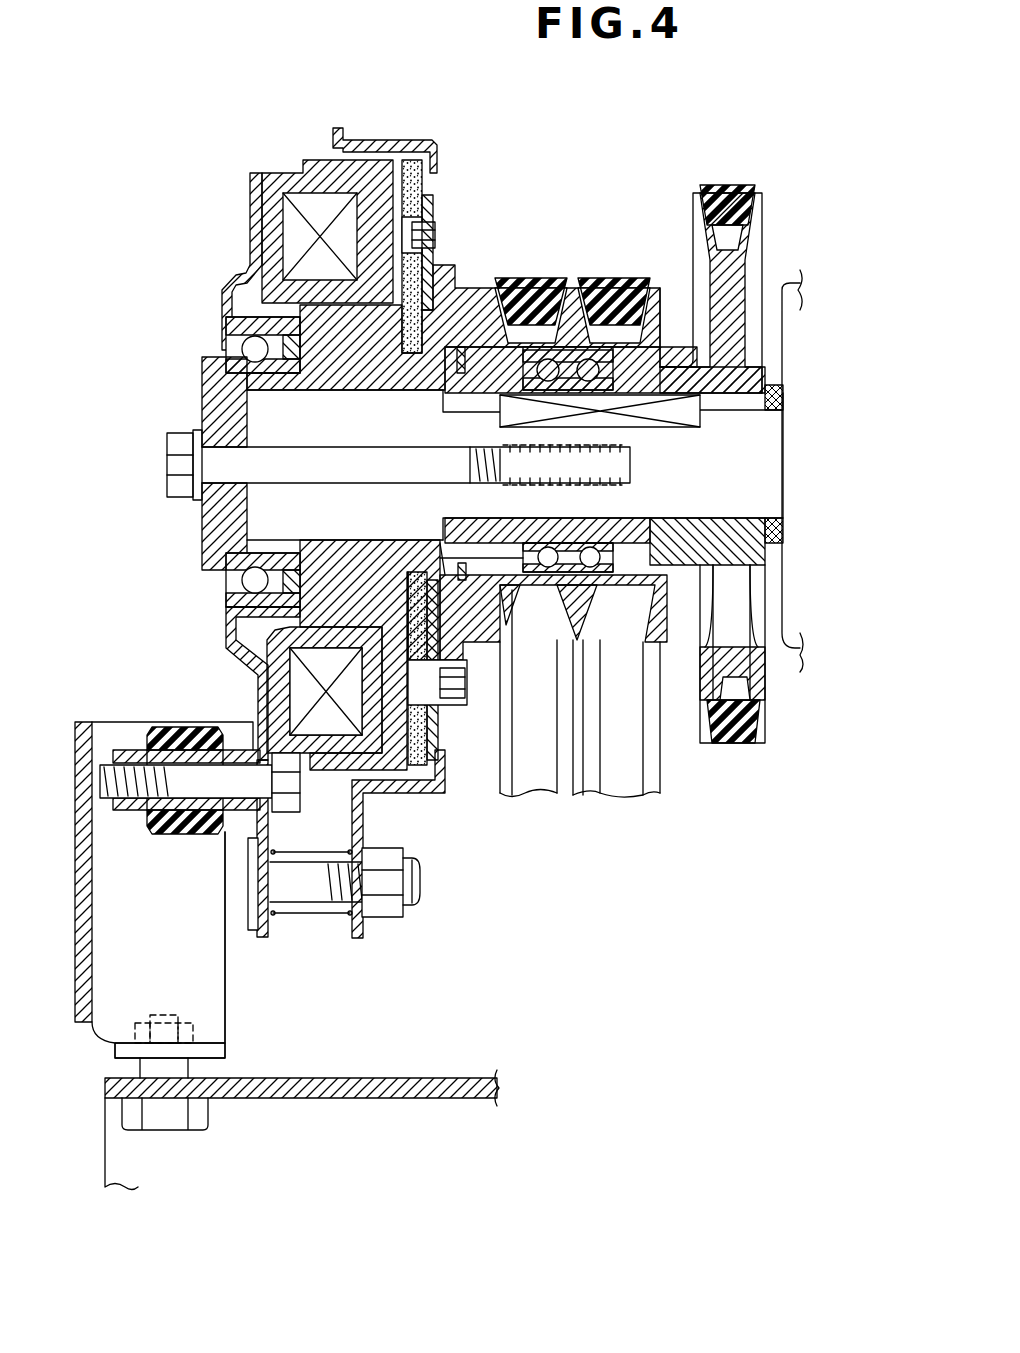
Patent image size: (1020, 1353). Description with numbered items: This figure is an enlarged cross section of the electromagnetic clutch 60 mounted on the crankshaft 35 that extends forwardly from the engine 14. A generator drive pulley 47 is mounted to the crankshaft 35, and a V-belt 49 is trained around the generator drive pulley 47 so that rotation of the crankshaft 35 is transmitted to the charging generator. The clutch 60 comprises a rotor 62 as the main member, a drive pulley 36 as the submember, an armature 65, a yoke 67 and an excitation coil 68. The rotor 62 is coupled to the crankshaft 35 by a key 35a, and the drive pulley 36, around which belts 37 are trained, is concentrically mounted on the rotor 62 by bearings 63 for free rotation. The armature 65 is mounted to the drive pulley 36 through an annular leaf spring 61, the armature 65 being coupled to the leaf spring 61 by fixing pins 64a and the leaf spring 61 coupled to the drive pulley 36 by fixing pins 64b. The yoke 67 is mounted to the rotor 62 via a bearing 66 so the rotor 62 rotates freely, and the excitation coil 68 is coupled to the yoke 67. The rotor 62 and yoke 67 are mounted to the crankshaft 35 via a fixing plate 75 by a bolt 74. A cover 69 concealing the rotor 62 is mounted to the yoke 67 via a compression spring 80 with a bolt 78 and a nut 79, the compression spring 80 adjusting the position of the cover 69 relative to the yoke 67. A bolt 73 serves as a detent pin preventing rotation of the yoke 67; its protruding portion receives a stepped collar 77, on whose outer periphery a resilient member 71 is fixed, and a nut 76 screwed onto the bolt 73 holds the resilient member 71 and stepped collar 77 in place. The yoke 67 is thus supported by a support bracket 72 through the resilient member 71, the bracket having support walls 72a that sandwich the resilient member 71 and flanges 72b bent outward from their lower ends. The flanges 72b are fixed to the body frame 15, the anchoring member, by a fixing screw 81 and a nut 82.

The engine 14 is at (806, 276).
The body frame 15 is at (480, 1078).
The crankshaft 35 is at (745, 485).
The key 35a is at (640, 420).
The drive pulley 36 is at (467, 283).
The belts 37 is at (527, 278).
The generator drive pulley 47 is at (763, 238).
The V-belt 49 is at (725, 185).
The electromagnetic clutch 60 is at (218, 116).
The annular leaf spring 61 is at (437, 253).
The rotor 62 is at (323, 162).
The bearings 63 is at (550, 360).
The fixing pins 64a is at (410, 190).
The fixing pins 64b is at (462, 680).
The armature 65 is at (440, 150).
The bearing 66 is at (222, 300).
The yoke 67 is at (248, 250).
The excitation coil 68 is at (333, 208).
The cover 69 is at (440, 770).
The resilient member 71 is at (180, 730).
The support bracket 72 is at (112, 721).
The support walls 72a is at (182, 969).
The flanges 72b is at (228, 1055).
The bolt 73 is at (302, 787).
The bolt 74 is at (170, 462).
The fixing plate 75 is at (215, 362).
The nut 76 is at (132, 818).
The stepped collar 77 is at (190, 832).
The bolt 78 is at (421, 881).
The nut 79 is at (386, 918).
The compression spring 80 is at (325, 922).
The fixing screw 81 is at (172, 1133).
The nut 82 is at (200, 1030).